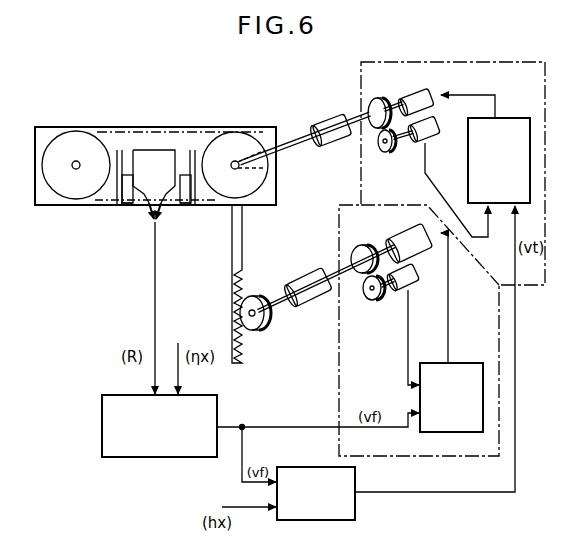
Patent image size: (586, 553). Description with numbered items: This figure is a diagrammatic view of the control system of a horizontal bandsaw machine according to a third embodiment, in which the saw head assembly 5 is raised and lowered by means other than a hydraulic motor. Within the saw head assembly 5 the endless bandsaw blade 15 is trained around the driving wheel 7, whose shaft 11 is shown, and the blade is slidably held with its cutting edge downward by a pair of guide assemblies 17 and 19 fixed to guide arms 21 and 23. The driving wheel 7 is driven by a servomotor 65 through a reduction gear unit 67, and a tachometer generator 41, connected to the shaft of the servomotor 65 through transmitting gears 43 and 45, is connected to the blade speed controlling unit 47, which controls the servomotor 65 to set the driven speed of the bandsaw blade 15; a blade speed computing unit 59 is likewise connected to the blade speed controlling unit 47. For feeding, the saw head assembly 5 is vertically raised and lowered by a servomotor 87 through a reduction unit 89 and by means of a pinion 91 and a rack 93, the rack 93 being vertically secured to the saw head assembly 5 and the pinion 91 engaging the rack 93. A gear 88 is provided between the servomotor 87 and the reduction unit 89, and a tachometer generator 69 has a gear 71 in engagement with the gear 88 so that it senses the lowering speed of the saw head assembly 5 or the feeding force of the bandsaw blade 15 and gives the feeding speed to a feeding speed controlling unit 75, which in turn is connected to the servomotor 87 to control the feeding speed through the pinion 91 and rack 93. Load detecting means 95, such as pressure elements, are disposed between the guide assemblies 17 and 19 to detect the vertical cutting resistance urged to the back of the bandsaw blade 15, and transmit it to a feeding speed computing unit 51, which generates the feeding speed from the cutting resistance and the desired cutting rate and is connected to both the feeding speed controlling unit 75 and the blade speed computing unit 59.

The saw head assembly 5 is at (229, 119).
The bandsaw blade 15 is at (148, 128).
The shaft 11 is at (237, 160).
The guide arm 23 is at (120, 158).
The guide arm 21 is at (191, 158).
The load detecting means 95 is at (124, 190).
The guide assembly 19 is at (127, 207).
The guide assembly 17 is at (180, 207).
The driving wheel 7 is at (276, 167).
The reduction gear unit 67 is at (331, 140).
The gear 43 is at (377, 97).
The gear 45 is at (384, 152).
The servomotor 65 is at (420, 90).
The tachometer generator 41 is at (433, 120).
The blade speed controlling unit 47 is at (499, 160).
The pinion 91 is at (257, 327).
The reduction unit 89 is at (310, 299).
The gear 88 is at (352, 250).
The servomotor 87 is at (421, 250).
The gear 71 is at (369, 300).
The tachometer generator 69 is at (401, 291).
The feeding speed controlling unit 75 is at (451, 397).
The rack 93 is at (232, 313).
The feeding speed computing unit 51 is at (159, 426).
The blade speed computing unit 59 is at (316, 493).